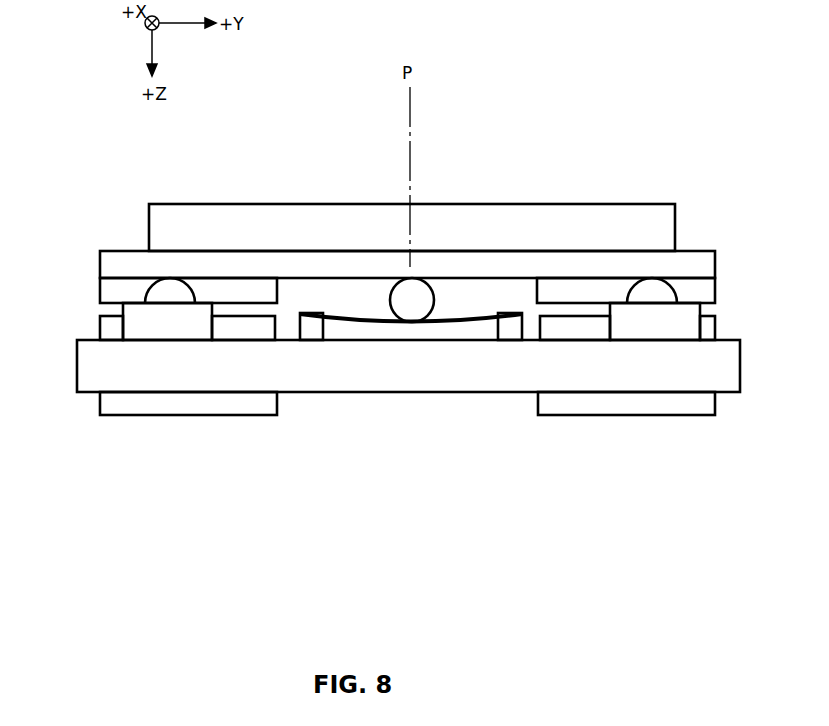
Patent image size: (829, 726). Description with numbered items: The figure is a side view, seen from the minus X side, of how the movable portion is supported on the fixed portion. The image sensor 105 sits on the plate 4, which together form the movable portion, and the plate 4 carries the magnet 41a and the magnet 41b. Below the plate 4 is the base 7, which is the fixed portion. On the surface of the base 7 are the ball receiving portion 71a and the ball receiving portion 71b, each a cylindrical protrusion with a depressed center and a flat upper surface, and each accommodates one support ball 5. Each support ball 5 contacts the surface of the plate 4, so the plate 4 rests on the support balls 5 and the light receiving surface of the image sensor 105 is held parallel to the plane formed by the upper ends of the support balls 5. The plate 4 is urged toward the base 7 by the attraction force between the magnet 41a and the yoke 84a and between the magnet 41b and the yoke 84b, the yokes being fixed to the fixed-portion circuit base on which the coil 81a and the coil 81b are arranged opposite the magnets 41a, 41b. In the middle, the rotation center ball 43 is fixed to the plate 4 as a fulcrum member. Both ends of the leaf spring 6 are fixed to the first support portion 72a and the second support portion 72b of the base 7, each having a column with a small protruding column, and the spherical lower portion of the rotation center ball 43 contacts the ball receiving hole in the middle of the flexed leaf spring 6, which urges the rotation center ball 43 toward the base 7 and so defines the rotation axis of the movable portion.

The image sensor 105 is at (652, 233).
The plate 4 is at (688, 266).
The magnet 41a is at (127, 294).
The magnet 41b is at (698, 292).
The support ball 5 is at (172, 292).
The rotation center ball 43 is at (423, 300).
The ball receiving portion 71a is at (158, 322).
The ball receiving portion 71b is at (667, 322).
The coil 81a is at (112, 329).
The coil 81b is at (706, 329).
The first support portion 72a is at (314, 325).
The second support portion 72b is at (508, 326).
The leaf spring 6 is at (427, 323).
The base 7 is at (722, 368).
The yoke 84a is at (263, 403).
The yoke 84b is at (562, 403).